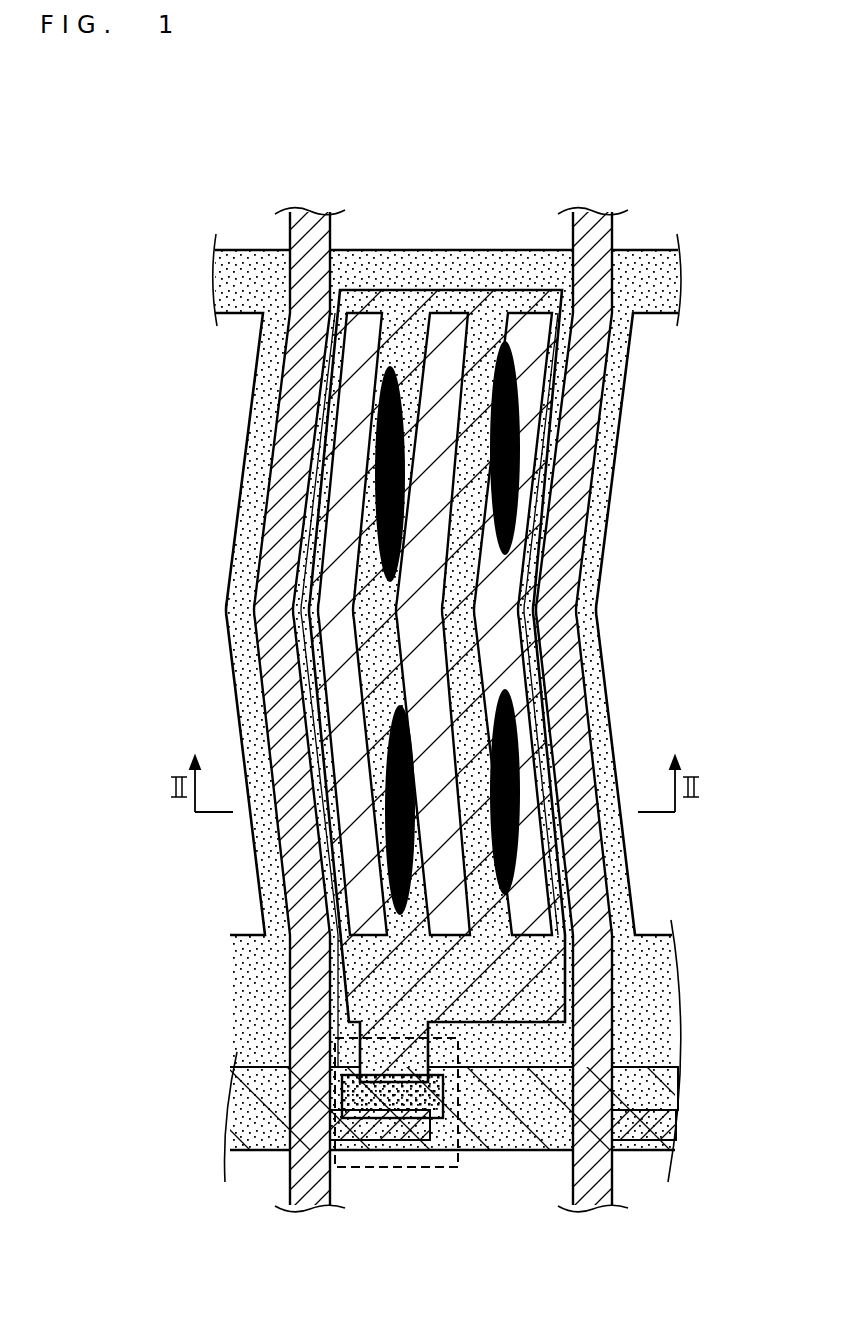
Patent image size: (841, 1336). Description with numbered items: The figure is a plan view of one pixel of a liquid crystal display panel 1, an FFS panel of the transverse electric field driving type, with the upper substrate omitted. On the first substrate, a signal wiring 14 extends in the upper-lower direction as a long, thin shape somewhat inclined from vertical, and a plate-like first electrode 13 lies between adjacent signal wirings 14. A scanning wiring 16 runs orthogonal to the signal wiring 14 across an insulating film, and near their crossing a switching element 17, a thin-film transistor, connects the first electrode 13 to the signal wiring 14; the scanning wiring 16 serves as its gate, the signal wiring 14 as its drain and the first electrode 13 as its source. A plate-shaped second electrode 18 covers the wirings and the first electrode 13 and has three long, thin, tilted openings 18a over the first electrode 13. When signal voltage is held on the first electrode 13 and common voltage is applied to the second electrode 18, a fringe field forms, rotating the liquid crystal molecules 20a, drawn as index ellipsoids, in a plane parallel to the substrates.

The liquid crystal display panel 1 is at (97, 125).
The first electrode 13 is at (351, 624).
The signal wiring 14 is at (593, 882).
The scanning wiring 16 is at (505, 1123).
The switching element 17 is at (392, 1167).
The second electrode 18 is at (235, 575).
The opening 18a is at (334, 488).
The liquid crystal molecules 20a is at (385, 380).